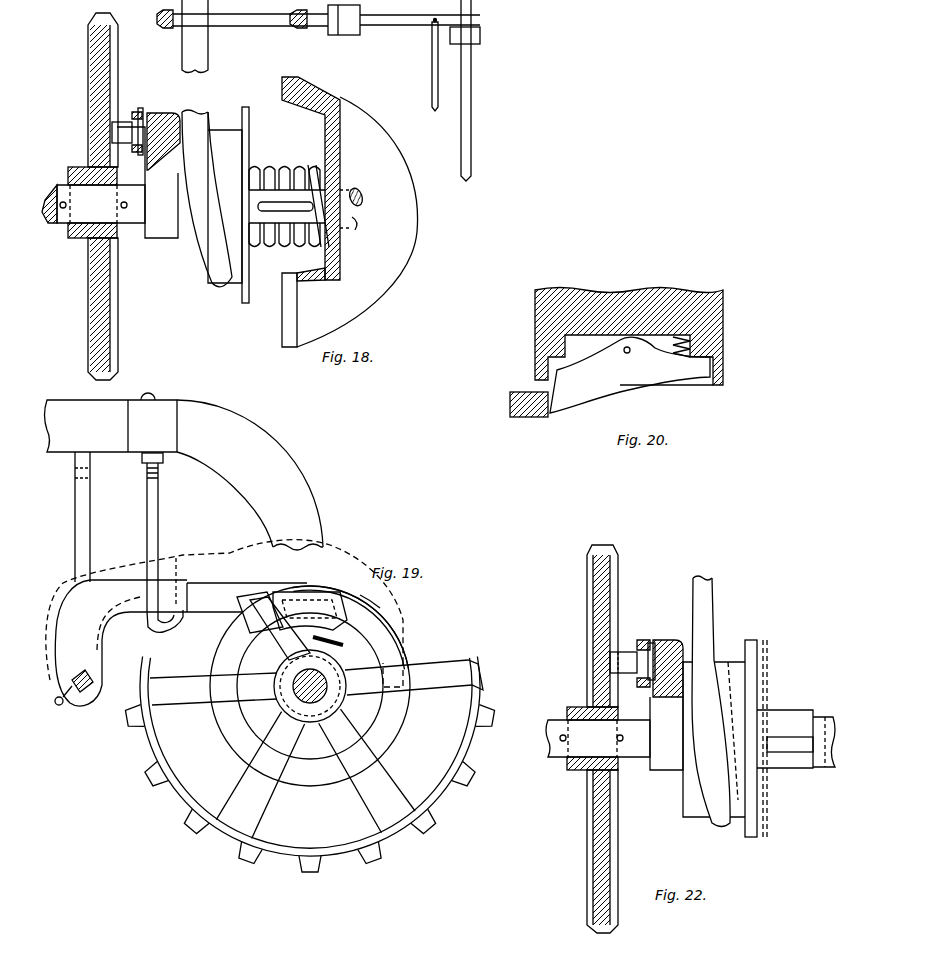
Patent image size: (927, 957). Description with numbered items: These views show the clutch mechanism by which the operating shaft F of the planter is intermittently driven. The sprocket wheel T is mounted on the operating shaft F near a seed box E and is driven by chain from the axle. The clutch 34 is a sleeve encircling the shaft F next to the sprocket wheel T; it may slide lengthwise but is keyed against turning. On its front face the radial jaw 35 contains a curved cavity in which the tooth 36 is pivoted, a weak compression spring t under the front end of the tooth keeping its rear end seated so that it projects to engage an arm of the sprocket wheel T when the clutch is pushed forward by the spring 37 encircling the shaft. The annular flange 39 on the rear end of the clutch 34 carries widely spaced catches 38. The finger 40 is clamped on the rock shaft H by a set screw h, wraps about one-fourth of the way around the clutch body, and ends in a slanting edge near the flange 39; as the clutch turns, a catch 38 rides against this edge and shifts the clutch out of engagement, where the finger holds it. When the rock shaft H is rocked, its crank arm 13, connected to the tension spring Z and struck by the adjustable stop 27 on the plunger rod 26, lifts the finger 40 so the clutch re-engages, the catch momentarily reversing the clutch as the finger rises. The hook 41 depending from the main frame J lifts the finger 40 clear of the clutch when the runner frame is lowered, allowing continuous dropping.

In FIG. 18, the crank arm 13 is at (397, 21).
In FIG. 18, the plunger rod 26 is at (461, 133).
In FIG. 19, the plunger rod 26 is at (84, 512).
In FIG. 18, the adjustable stop 27 is at (465, 35).
In FIG. 18, the clutch 34 is at (160, 188).
In FIG. 19, the clutch 34 is at (322, 686).
In FIG. 22, the clutch 34 is at (673, 763).
In FIG. 18, the jaw 35 is at (162, 113).
In FIG. 20, the jaw 35 is at (541, 337).
In FIG. 19, the jaw 35 is at (377, 592).
In FIG. 22, the jaw 35 is at (657, 640).
In FIG. 18, the tooth 36 is at (120, 122).
In FIG. 20, the tooth 36 is at (630, 375).
In FIG. 19, the tooth 36 is at (308, 606).
In FIG. 22, the tooth 36 is at (628, 652).
In FIG. 18, the spring 37 is at (278, 167).
In FIG. 18, the catch 38 is at (228, 121).
In FIG. 22, the catch 38 is at (722, 656).
In FIG. 18, the annular flange 39 is at (248, 125).
In FIG. 22, the annular flange 39 is at (757, 667).
In FIG. 18, the finger 40 is at (207, 143).
In FIG. 19, the finger 40 is at (227, 623).
In FIG. 22, the finger 40 is at (703, 618).
In FIG. 19, the hook 41 is at (158, 538).
In FIG. 18, the sprocket wheel T is at (118, 60).
In FIG. 20, the sprocket wheel T is at (510, 407).
In FIG. 19, the sprocket wheel T is at (463, 758).
In FIG. 22, the sprocket wheel T is at (613, 593).
In FIG. 18, the operating shaft F is at (133, 213).
In FIG. 19, the operating shaft F is at (283, 700).
In FIG. 22, the operating shaft F is at (553, 750).
In FIG. 18, the rock shaft H is at (264, 27).
In FIG. 19, the rock shaft H is at (80, 694).
In FIG. 18, the seed box E is at (350, 212).
In FIG. 18, the tension spring Z is at (432, 73).
In FIG. 19, the main frame J is at (184, 471).
In FIG. 19, the set screw h is at (56, 704).
In FIG. 20, the compression spring t is at (690, 343).